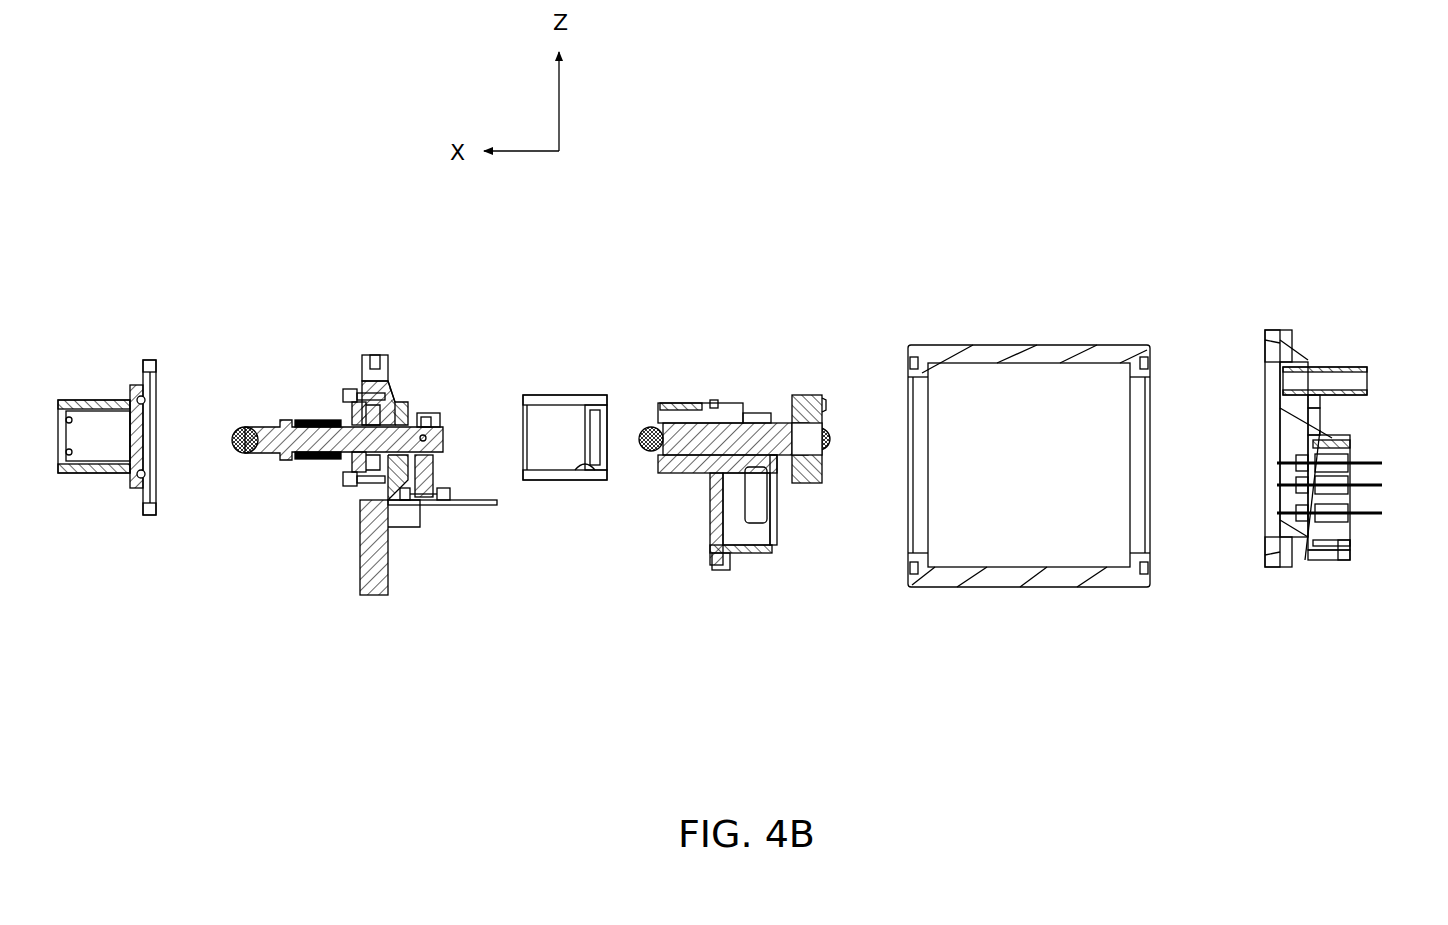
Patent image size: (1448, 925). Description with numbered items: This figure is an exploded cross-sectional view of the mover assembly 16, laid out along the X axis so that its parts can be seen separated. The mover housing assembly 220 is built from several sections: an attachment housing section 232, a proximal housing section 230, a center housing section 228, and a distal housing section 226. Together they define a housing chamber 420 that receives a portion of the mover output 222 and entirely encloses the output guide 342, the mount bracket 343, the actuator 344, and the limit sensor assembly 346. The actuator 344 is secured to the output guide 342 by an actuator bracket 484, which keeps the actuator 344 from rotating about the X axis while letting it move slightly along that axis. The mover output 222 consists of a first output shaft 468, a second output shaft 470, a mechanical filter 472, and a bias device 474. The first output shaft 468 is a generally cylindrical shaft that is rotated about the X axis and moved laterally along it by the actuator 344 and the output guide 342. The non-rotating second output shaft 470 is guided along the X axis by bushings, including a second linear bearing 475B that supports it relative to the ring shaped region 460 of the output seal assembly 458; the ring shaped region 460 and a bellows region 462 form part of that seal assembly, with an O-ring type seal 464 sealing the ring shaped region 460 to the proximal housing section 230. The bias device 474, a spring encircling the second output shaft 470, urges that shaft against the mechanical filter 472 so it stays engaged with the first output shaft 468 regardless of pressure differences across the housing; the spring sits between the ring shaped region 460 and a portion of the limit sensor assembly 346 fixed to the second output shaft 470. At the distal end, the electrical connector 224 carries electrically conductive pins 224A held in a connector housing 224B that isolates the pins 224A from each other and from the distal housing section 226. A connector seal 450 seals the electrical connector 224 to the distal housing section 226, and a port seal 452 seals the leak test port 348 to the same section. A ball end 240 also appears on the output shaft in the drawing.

The mover assembly 16 is at (791, 262).
The mover housing assembly 220 is at (1033, 340).
The mover output 222 is at (265, 415).
The electrical connector 224 is at (1303, 540).
The electrical pins 224A is at (1330, 520).
The connector housing 224B is at (1293, 530).
The distal housing section 226 is at (1280, 340).
The center housing section 228 is at (1113, 352).
The proximal housing section 230 is at (378, 355).
The attachment housing section 232 is at (110, 402).
The ball end 240 is at (238, 458).
The output guide 342 is at (684, 405).
The mount bracket 343 is at (568, 395).
The actuator 344 is at (760, 410).
The limit sensor assembly 346 is at (470, 505).
The leak test port 348 is at (1338, 380).
The housing chamber 420 is at (1032, 393).
The connector seal 450 is at (1338, 440).
The port seal 452 is at (1308, 363).
The output seal assembly 458 is at (352, 484).
The ring shaped region 460 is at (356, 390).
The bellows region 462 is at (313, 458).
The O-ring type seal 464 is at (356, 488).
The first output shaft 468 is at (716, 440).
The second output shaft 470 is at (275, 442).
The mechanical filter 472 is at (645, 452).
The bias device 474 is at (397, 425).
The second linear bearing 475B is at (396, 392).
The actuator bracket 484 is at (713, 513).